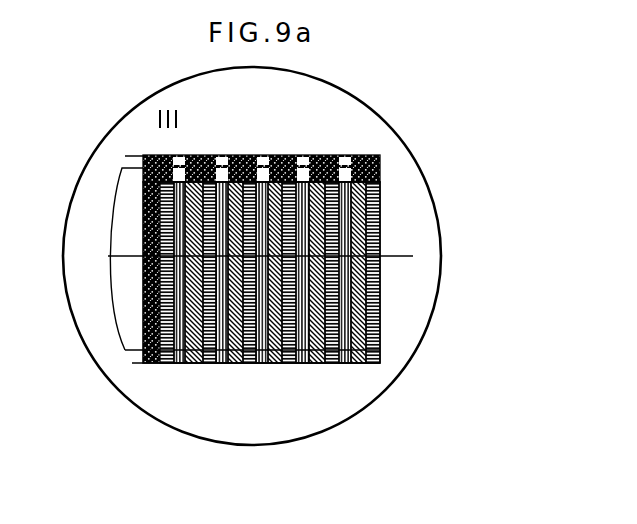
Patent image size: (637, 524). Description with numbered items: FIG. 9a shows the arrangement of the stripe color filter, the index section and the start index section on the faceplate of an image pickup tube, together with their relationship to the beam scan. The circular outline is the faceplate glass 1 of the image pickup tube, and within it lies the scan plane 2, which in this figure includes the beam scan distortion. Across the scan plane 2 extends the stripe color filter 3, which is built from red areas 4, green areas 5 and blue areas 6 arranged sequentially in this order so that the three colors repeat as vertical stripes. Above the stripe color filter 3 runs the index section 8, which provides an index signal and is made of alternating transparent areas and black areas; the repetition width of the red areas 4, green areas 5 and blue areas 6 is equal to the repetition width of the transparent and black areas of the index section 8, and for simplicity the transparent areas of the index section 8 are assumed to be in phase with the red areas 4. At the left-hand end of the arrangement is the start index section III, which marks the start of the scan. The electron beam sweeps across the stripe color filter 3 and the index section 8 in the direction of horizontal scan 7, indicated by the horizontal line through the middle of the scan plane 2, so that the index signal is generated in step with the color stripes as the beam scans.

The faceplate glass 1 is at (372, 111).
The scan plane 2 is at (259, 284).
The stripe color filter 3 is at (378, 324).
The red areas 4 is at (182, 363).
The green areas 5 is at (195, 363).
The blue areas 6 is at (206, 363).
The direction of horizontal scan 7 is at (400, 258).
The index section 8 is at (381, 154).
The start index section III is at (155, 154).